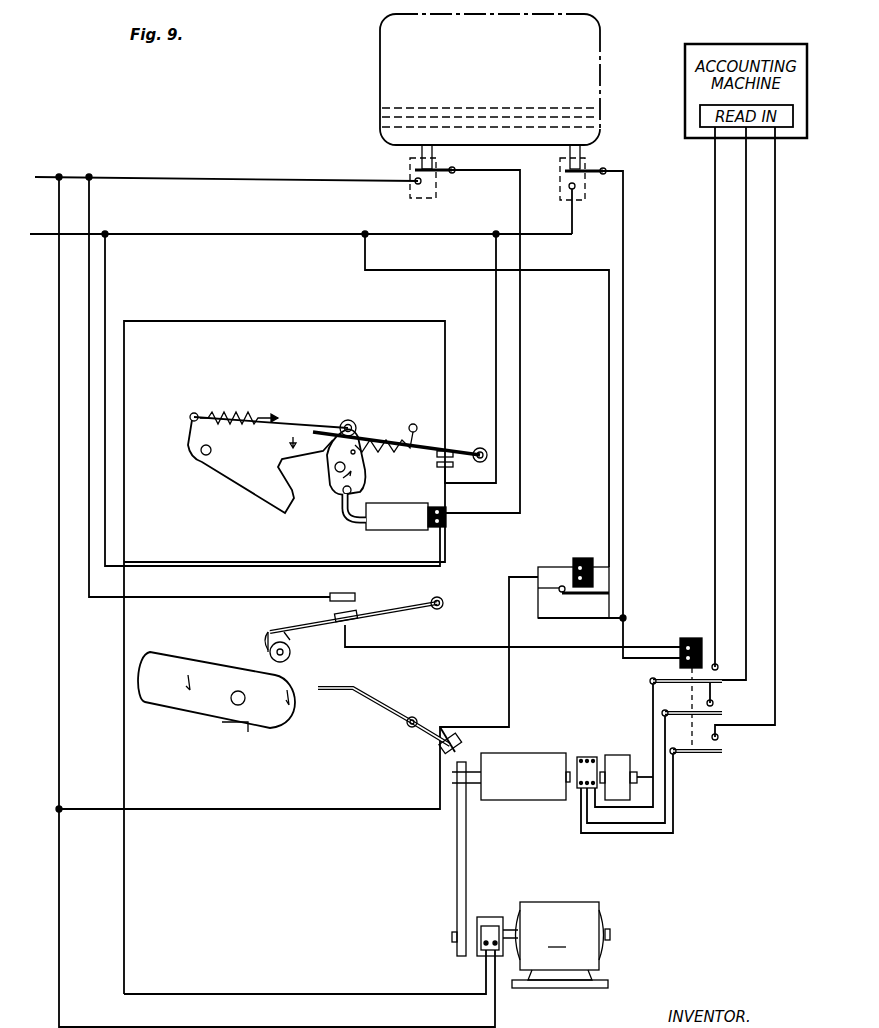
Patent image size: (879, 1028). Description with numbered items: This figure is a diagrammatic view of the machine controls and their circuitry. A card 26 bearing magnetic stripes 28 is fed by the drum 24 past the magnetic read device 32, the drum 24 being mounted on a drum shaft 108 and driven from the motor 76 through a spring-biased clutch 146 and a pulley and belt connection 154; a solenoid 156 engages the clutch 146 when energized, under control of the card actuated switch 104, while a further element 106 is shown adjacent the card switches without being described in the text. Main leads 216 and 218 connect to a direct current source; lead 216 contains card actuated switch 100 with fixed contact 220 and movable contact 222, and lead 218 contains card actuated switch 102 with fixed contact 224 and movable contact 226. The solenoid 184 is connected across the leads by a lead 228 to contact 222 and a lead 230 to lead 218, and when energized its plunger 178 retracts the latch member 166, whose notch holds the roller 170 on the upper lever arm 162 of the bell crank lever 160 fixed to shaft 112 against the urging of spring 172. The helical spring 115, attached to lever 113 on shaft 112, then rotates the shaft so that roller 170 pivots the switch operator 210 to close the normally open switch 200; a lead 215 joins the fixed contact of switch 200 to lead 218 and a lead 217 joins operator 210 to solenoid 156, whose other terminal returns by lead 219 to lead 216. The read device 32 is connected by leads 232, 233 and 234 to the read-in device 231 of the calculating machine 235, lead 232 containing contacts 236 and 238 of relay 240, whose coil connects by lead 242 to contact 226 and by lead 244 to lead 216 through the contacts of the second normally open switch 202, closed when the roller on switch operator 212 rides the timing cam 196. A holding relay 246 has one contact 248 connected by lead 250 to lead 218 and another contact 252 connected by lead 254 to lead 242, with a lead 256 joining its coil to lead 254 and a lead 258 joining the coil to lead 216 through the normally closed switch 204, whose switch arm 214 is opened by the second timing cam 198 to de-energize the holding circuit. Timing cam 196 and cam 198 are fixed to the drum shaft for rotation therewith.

The card 26 is at (601, 60).
The magnetic stripe 28 is at (500, 110).
The card actuated switch 104 is at (432, 152).
The pipe 106 is at (580, 152).
The card actuated switch 100 is at (407, 196).
The card actuated switch 102 is at (590, 166).
The fixed contact 220 is at (420, 184).
The movable contact 222 is at (440, 174).
The fixed contact 224 is at (575, 190).
The movable contact 226 is at (595, 178).
The main lead 216 is at (180, 177).
The main lead 218 is at (140, 234).
The lead 219 is at (59, 325).
The lead 217 is at (285, 321).
The lead 215 is at (496, 325).
The lead 228 is at (520, 385).
The lead 230 is at (230, 556).
The lead 232 is at (715, 372).
The lead 242 is at (623, 460).
The lead 250 is at (609, 516).
The lead 258 is at (295, 809).
The lead 244 is at (200, 597).
The calculating machine 235 is at (685, 95).
The read-in device 231 is at (700, 116).
The lead 233 is at (746, 672).
The lead 234 is at (775, 700).
The contact 238 is at (720, 668).
The lever 160 is at (248, 485).
The lever 113 is at (190, 425).
The shaft 112 is at (200, 458).
The helical spring 115 is at (255, 400).
The upper lever arm 162 is at (300, 427).
The roller 170 is at (350, 420).
The latch member 166 is at (366, 473).
The spring 172 is at (388, 405).
The switch operator 210 is at (445, 448).
The normally open switch 200 is at (470, 445).
The solenoid 184 is at (395, 523).
The plunger 178 is at (352, 522).
The normally open switch 202 is at (385, 617).
The switch operator 212 is at (410, 606).
The timing cam 196 is at (268, 655).
The timing cam 198 is at (180, 658).
The drum shaft 108 is at (235, 702).
The switch arm 214 is at (400, 690).
The normally closed switch 204 is at (428, 748).
The lead 256 is at (545, 565).
The holding relay 246 is at (598, 570).
The contact 248 is at (592, 598).
The contact 252 is at (560, 594).
The lead 254 is at (600, 618).
The relay 240 is at (675, 665).
The drum 24 is at (648, 770).
The magnetic read device 32 is at (587, 755).
The contact 236 is at (626, 765).
The pulley and belt connection 154 is at (457, 855).
The clutch 146 is at (490, 917).
The solenoid 156 is at (492, 926).
The motor 76 is at (585, 902).